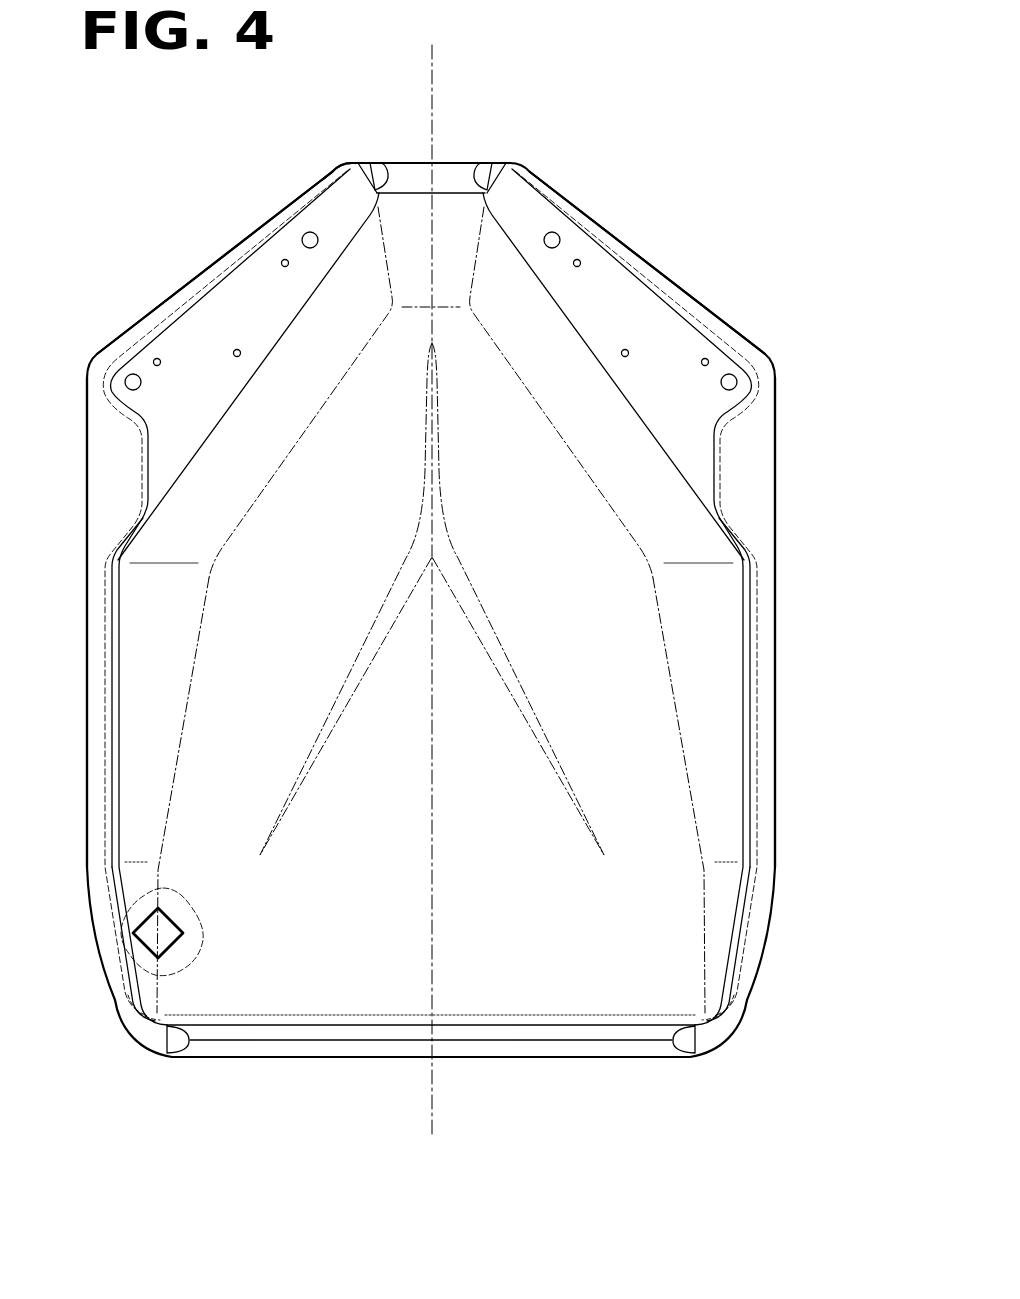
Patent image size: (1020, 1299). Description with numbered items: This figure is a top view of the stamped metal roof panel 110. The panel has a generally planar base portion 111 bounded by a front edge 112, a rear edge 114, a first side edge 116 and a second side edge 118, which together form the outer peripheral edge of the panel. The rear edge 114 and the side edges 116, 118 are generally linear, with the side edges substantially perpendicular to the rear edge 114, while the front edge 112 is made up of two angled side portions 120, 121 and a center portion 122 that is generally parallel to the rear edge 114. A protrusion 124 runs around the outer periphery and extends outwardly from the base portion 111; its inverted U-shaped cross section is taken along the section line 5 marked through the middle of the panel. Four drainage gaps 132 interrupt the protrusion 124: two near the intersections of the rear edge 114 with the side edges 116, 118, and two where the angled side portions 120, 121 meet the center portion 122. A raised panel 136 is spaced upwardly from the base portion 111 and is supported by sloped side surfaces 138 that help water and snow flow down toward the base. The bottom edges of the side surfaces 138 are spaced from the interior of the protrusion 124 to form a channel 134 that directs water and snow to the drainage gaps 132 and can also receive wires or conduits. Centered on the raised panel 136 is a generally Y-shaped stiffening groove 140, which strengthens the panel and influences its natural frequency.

The section line 5- 5 is at (432, 45).
The stamped metal roof panel 110 is at (646, 146).
The base portion 111 is at (223, 330).
The front edge 112 is at (441, 163).
The rear edge 114 is at (430, 1060).
The first side edge 116 is at (777, 685).
The second side edge 118 is at (87, 618).
The angled side portion 120 is at (712, 314).
The angled side portion 121 is at (255, 228).
The center portion 122 is at (412, 162).
The protrusion 124 is at (458, 173).
The drainage gap 132 is at (355, 176).
The channel 134 is at (117, 703).
The raised panel 136 is at (431, 796).
The side surfaces 138 is at (430, 470).
The stiffening groove 140 is at (431, 533).